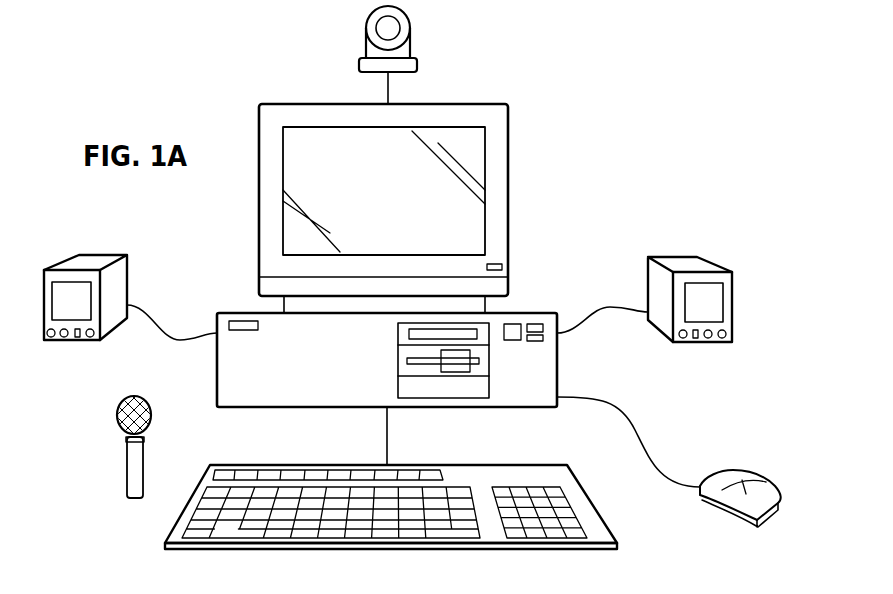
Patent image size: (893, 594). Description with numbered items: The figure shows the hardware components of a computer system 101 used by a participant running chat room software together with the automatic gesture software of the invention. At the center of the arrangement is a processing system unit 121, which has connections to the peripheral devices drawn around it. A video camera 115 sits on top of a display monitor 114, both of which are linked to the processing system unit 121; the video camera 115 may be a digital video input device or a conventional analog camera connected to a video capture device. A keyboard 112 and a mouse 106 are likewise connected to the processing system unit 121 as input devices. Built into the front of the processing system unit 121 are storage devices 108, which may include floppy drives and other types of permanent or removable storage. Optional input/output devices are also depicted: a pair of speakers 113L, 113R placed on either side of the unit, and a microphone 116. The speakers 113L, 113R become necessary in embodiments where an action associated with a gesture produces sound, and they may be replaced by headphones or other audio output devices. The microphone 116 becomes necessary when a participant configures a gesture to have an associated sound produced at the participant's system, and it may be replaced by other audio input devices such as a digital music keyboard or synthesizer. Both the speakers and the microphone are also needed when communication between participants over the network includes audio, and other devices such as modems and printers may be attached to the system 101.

The system 101 is at (698, 83).
The mouse 106 is at (732, 470).
The storage devices 108 is at (398, 367).
The keyboard 112 is at (560, 549).
The speaker 113L is at (110, 255).
The speaker 113R is at (677, 257).
The display monitor 114 is at (508, 120).
The video camera 115 is at (413, 33).
The microphone 116 is at (117, 413).
The processing system unit 121 is at (433, 407).